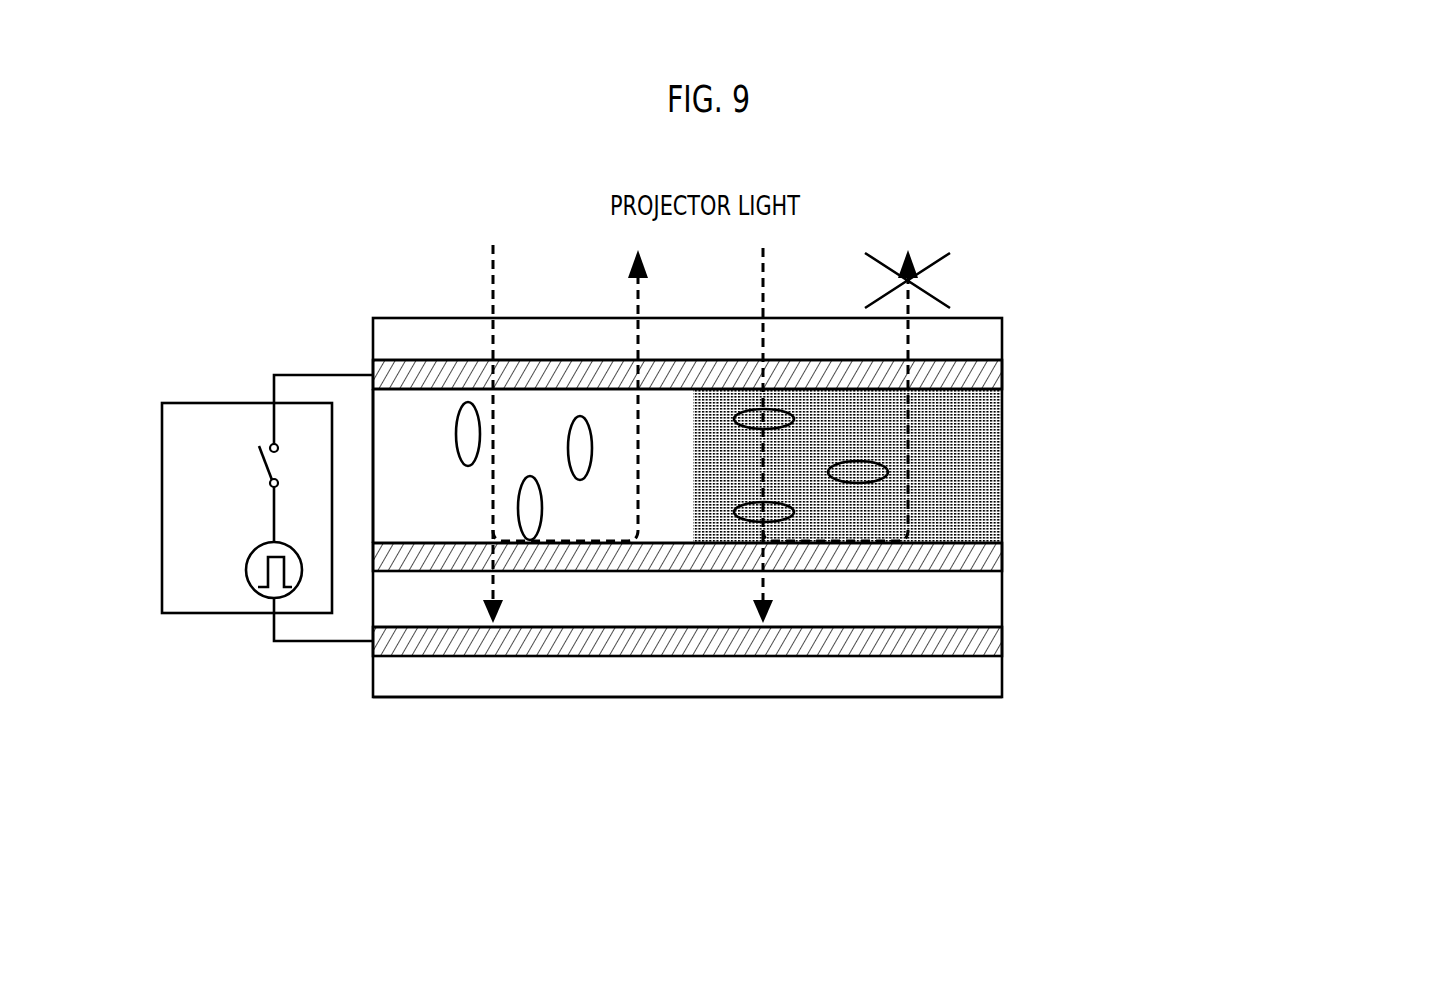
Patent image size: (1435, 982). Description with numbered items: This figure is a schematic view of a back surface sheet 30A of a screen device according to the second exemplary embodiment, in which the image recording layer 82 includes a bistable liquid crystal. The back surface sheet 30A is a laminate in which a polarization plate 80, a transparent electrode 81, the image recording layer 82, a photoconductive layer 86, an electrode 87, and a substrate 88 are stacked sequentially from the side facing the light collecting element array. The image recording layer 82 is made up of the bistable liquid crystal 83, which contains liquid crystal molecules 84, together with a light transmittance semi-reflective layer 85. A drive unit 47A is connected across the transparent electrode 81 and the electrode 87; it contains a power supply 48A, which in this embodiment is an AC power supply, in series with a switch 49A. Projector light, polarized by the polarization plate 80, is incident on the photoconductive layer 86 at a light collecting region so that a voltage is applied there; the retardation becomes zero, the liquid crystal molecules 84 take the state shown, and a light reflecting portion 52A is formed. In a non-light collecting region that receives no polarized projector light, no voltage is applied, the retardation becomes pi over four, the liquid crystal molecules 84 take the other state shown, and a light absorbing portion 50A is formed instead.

The back surface sheet 30A is at (1017, 277).
The drive unit 47A is at (247, 403).
The power supply 48A is at (246, 570).
The switch 49A is at (248, 459).
The light absorbing portion 50A is at (837, 530).
The light reflecting portion 52A is at (567, 530).
The polarization plate 80 is at (1003, 330).
The transparent electrode 81 is at (1003, 372).
The image recording layer 82 is at (1260, 388).
The bistable liquid crystal 83 is at (975, 417).
The liquid crystal molecule 84 is at (888, 470).
The light transmittance semi-reflective layer 85 is at (1003, 557).
The photoconductive layer 86 is at (1003, 595).
The electrode 87 is at (1003, 637).
The substrate 88 is at (1003, 677).